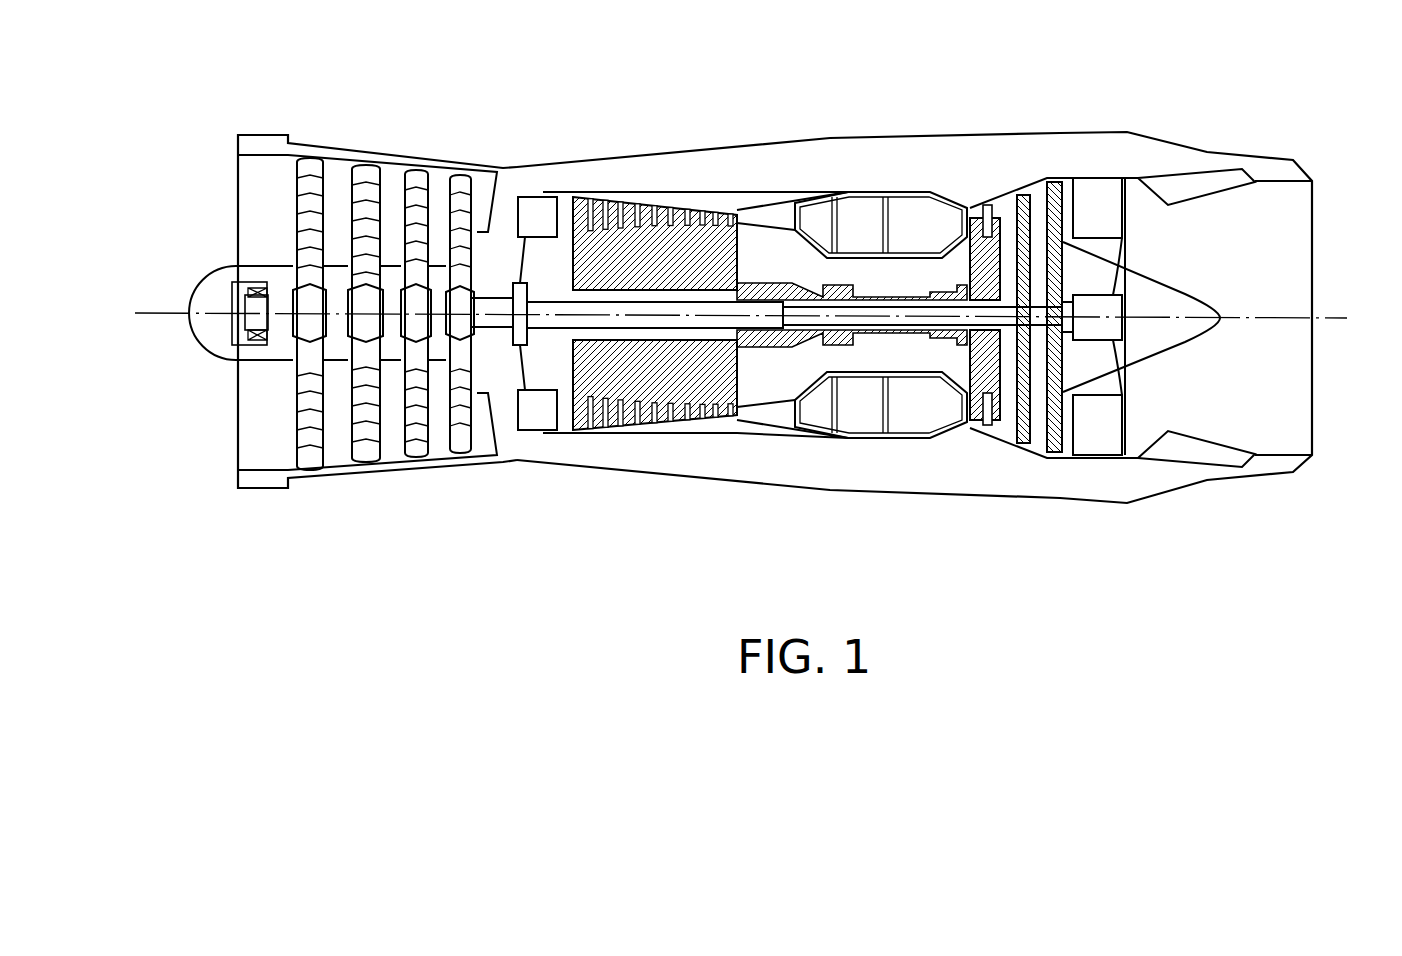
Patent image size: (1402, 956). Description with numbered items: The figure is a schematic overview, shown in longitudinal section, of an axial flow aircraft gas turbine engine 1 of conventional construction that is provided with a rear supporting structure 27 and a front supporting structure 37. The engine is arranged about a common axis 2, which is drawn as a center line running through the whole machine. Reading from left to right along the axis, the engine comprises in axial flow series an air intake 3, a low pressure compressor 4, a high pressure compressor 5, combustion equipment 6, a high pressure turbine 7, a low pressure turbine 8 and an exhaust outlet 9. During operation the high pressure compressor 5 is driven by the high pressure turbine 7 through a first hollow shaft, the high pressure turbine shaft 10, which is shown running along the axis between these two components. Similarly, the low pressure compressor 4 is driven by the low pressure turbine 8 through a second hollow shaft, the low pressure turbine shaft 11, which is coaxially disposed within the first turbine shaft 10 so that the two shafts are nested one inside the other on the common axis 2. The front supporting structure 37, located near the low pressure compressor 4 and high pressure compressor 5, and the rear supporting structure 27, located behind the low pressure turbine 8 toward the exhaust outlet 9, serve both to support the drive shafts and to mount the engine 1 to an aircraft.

The axial flow aircraft gas turbine engine 1 is at (1178, 603).
The common axis 2 is at (162, 313).
The air intake 3 is at (262, 190).
The low pressure compressor 4 is at (395, 175).
The high pressure compressor 5 is at (642, 207).
The combustion equipment 6 is at (915, 200).
The high pressure turbine 7 is at (992, 207).
The low pressure turbine 8 is at (1050, 187).
The exhaust outlet 9 is at (1290, 213).
The high pressure turbine shaft 10 is at (753, 347).
The low pressure turbine shaft 11 is at (917, 320).
The rear supporting structure 27 is at (1100, 190).
The front supporting structure 37 is at (547, 207).